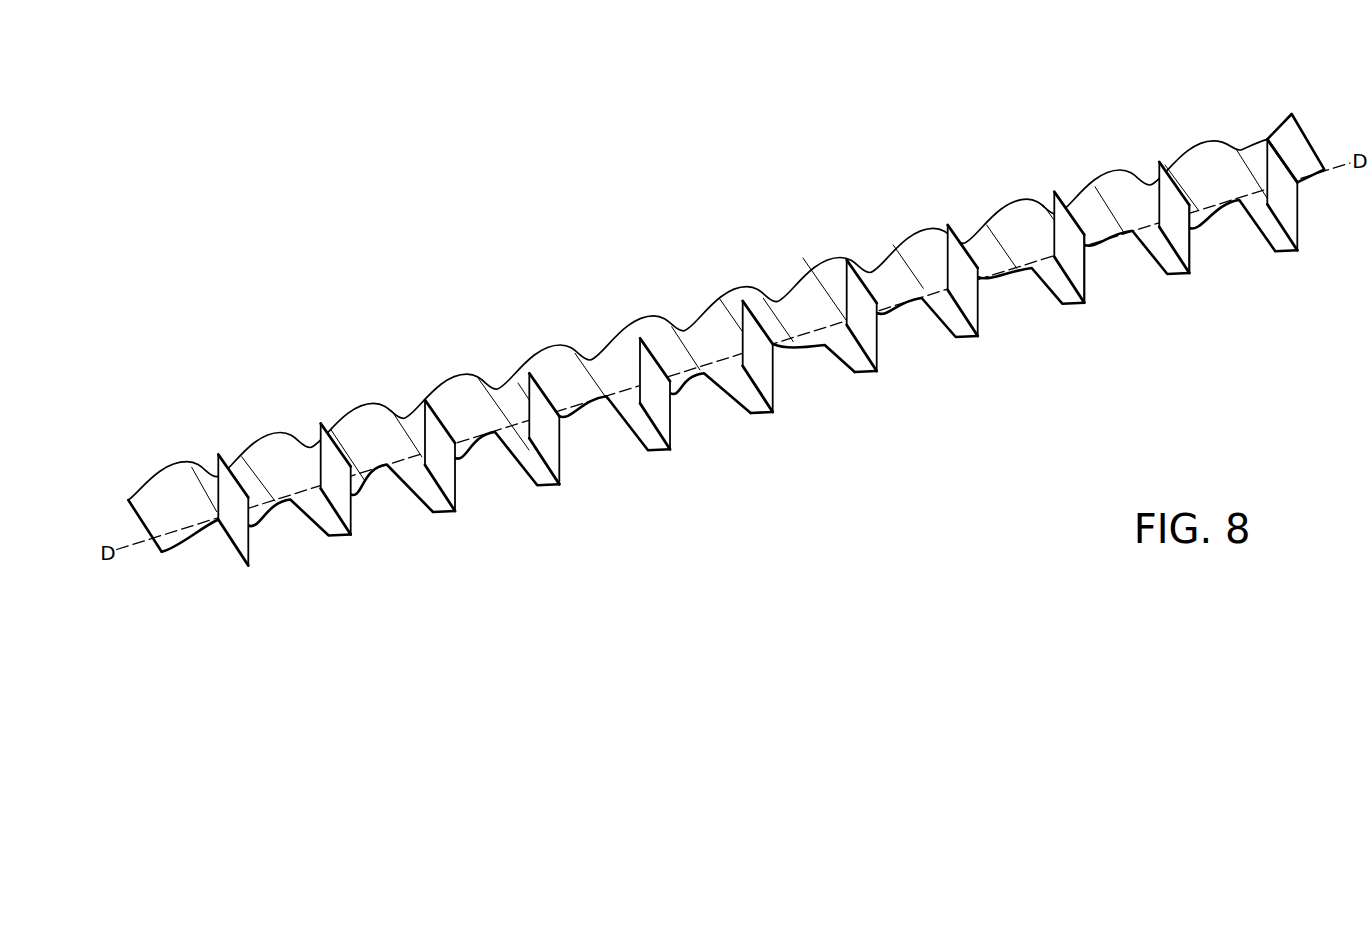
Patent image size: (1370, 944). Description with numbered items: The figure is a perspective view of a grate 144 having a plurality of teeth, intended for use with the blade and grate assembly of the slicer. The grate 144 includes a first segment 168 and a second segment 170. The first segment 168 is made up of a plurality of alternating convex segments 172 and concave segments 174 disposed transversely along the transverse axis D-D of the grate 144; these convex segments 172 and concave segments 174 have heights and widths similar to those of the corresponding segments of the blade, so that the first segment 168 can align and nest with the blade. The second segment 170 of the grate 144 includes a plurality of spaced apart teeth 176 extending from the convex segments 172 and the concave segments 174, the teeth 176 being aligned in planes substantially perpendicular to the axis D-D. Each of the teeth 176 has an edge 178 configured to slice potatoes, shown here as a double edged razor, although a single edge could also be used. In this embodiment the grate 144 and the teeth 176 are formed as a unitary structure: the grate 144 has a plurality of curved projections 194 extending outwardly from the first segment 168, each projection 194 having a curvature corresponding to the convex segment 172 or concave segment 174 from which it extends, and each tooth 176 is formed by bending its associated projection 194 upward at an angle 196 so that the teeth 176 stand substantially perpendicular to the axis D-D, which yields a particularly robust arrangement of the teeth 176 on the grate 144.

The grate 144 is at (710, 311).
The first segment 168 is at (128, 500).
The second segment 170 is at (182, 591).
The convex segments 172 is at (742, 287).
The concave segments 174 is at (1017, 283).
The teeth 176 is at (1092, 206).
The edge 178 is at (1087, 280).
The curved projections 194 is at (737, 403).
The angle 196 is at (755, 413).